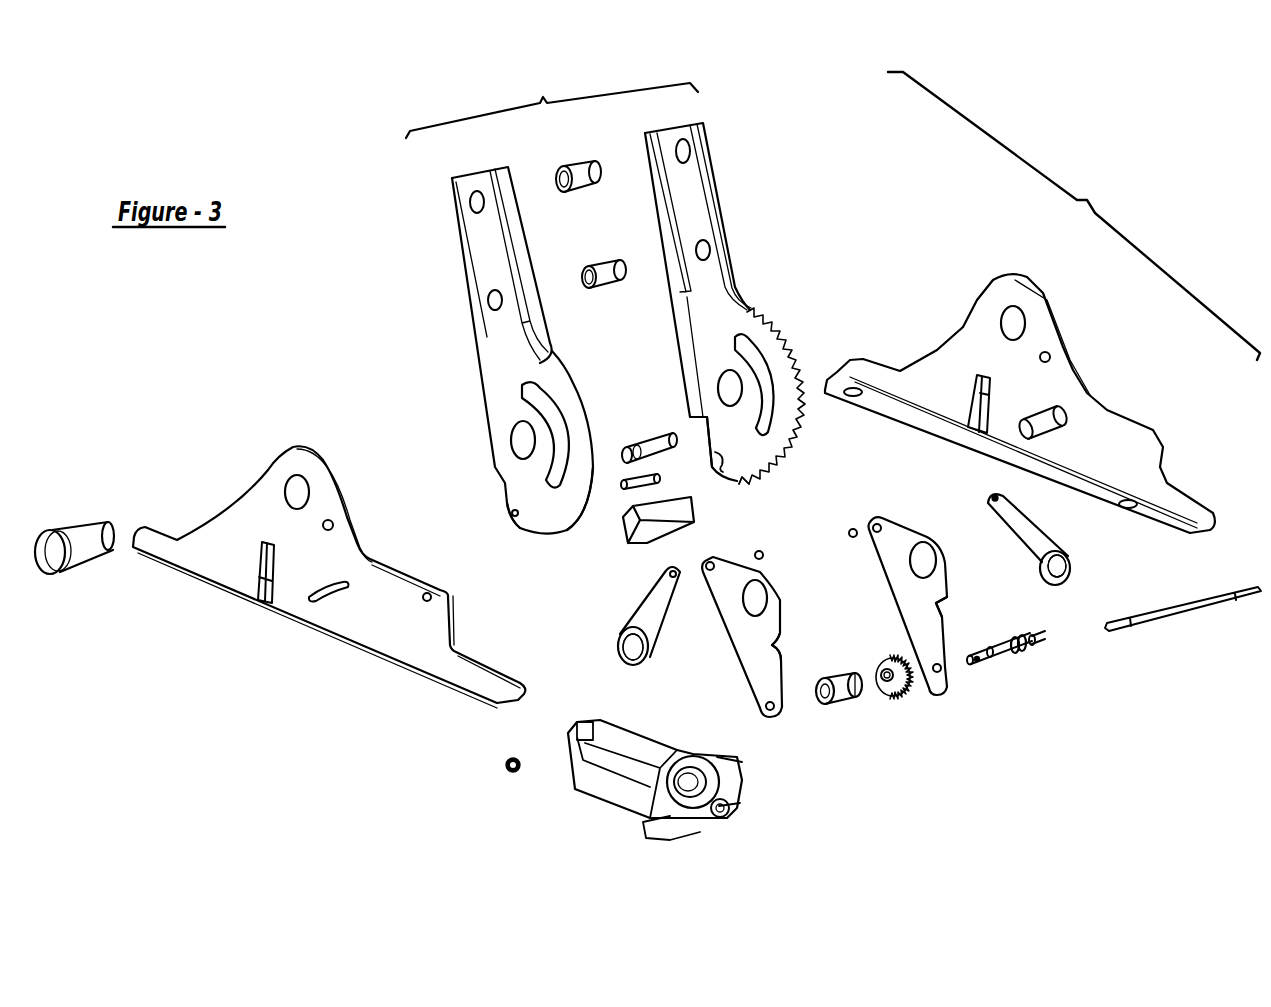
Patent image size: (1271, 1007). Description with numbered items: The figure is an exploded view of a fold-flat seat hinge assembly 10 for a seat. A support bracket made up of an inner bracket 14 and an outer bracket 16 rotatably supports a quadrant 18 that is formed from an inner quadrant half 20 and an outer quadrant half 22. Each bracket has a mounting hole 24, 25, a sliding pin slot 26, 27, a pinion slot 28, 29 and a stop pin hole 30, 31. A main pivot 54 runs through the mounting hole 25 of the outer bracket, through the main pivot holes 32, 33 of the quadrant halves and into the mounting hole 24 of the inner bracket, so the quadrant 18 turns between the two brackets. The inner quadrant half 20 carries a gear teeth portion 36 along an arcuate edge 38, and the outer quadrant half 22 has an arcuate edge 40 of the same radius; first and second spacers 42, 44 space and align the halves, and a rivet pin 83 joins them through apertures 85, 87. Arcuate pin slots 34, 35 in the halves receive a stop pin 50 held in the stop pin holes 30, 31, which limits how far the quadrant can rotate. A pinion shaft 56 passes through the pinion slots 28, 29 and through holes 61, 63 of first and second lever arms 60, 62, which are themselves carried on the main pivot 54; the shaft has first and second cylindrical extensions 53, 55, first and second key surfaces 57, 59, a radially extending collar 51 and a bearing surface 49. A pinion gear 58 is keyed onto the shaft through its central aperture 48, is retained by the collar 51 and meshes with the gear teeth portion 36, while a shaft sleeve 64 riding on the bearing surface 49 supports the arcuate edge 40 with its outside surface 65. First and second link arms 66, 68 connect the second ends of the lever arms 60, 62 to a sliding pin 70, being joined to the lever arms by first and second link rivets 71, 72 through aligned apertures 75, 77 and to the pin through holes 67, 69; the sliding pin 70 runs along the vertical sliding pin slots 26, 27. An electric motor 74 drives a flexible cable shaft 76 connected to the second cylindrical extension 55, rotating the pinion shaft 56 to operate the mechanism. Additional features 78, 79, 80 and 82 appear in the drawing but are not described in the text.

The fold-flat seat hinge assembly 10 is at (1074, 216).
The inner bracket 14 is at (1122, 455).
The outer bracket 16 is at (388, 600).
The quadrant 18 is at (552, 105).
The inner quadrant half 20 is at (683, 357).
The outer quadrant half 22 is at (500, 345).
The mounting hole 24 is at (1010, 275).
The mounting hole 25 is at (290, 487).
The sliding pin slot 26 is at (915, 385).
The sliding pin slot 27 is at (262, 560).
The pinion slot 28 is at (1050, 415).
The pinion slot 29 is at (337, 593).
The stop pin hole 30 is at (1040, 354).
The stop pin hole 31 is at (327, 522).
The main pivot hole 32 is at (730, 387).
The main pivot hole 33 is at (525, 440).
The pin slot 34 is at (752, 308).
The pin slot 35 is at (550, 383).
The gear teeth portion 36 is at (793, 340).
The arcuate edge 38 is at (803, 437).
The arcuate edge 40 is at (595, 490).
The first spacer 42 is at (582, 175).
The second spacer 44 is at (605, 275).
The aperture 48 is at (883, 674).
The bearing surface 49 is at (985, 650).
The stop pin 50 is at (653, 440).
The collar 51 is at (1035, 641).
The first cylindrical extension 53 is at (977, 658).
The main pivot 54 is at (82, 533).
The second cylindrical extension 55 is at (1040, 650).
The pinion shaft 56 is at (989, 658).
The first key surface 57 is at (1013, 650).
The pinion gear 58 is at (897, 697).
The second key surface 59 is at (1022, 643).
The first lever arm 60 is at (915, 588).
The hole 61 is at (942, 696).
The second lever arm 62 is at (762, 668).
The hole 63 is at (767, 717).
The shaft sleeve 64 is at (823, 706).
The outside surface 65 is at (842, 682).
The first link arm 66 is at (1012, 526).
The hole 67 is at (1040, 578).
The second link arm 68 is at (660, 613).
The hole 69 is at (632, 650).
The sliding pin 70 is at (662, 535).
The first link rivet 71 is at (850, 535).
The second link rivet 72 is at (762, 550).
The electric motor 74 is at (615, 795).
The aperture 75 is at (711, 562).
The cable shaft 76 is at (1190, 610).
The aperture 77 is at (673, 570).
The edge 78 is at (698, 465).
The hole 79 is at (510, 512).
The notch 80 is at (940, 603).
The notch 82 is at (770, 645).
The rivet pin 83 is at (655, 483).
The aperture 85 is at (516, 510).
The aperture 87 is at (718, 452).